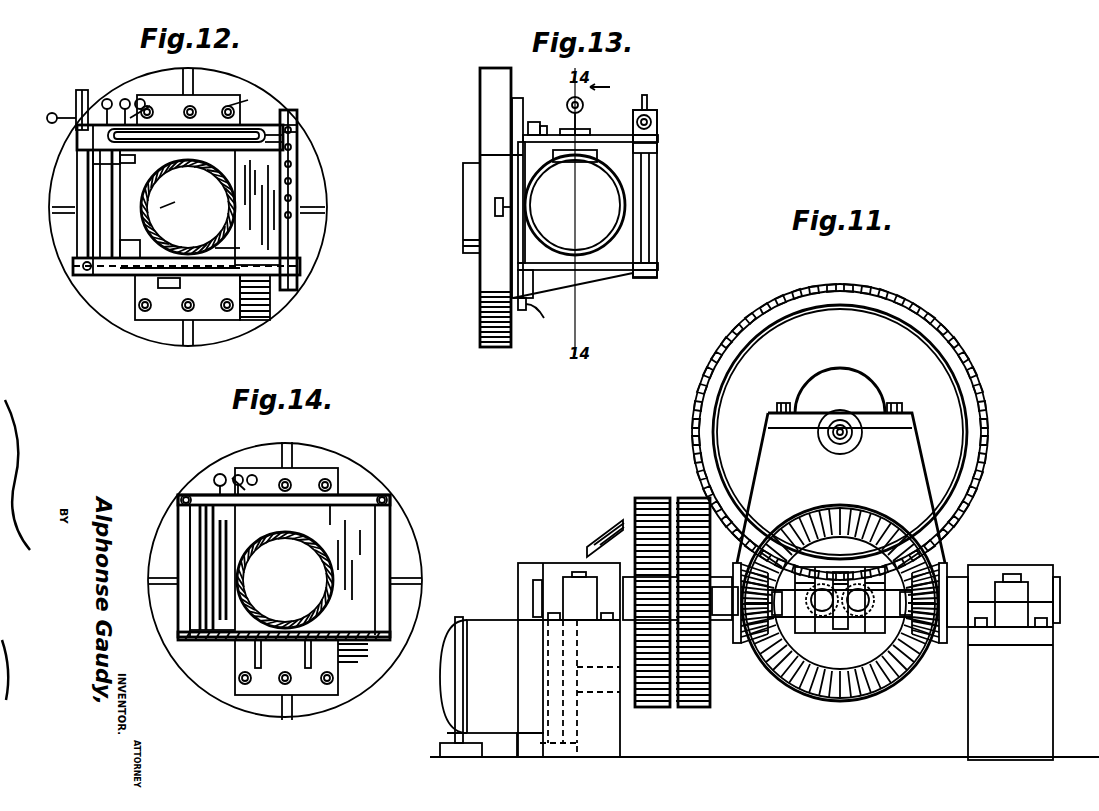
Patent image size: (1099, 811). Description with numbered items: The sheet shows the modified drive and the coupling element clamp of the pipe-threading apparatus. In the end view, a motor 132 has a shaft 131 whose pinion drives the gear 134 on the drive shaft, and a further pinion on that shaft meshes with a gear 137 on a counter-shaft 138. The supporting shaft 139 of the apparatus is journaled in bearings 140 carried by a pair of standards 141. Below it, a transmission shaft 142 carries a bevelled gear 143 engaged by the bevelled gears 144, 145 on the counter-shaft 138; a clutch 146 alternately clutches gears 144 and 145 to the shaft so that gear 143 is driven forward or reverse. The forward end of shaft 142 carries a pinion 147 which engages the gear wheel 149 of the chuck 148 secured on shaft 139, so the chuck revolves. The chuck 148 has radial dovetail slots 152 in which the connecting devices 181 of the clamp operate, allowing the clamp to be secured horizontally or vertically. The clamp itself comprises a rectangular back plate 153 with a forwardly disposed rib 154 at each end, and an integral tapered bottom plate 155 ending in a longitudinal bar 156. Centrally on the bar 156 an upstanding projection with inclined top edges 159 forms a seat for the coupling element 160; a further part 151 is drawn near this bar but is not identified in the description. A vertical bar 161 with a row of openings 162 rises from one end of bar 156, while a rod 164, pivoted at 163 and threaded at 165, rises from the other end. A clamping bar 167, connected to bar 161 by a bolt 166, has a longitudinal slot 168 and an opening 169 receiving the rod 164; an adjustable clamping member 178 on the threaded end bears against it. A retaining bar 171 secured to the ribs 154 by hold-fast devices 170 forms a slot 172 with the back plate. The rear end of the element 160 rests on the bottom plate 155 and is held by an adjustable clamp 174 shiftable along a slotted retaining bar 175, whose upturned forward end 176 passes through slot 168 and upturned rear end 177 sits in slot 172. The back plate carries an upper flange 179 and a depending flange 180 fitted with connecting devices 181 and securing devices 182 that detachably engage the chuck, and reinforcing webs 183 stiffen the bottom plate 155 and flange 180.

In FIG. 11, the shaft 131 is at (622, 715).
In FIG. 11, the motor 132 is at (491, 687).
In FIG. 11, the gear 134 is at (640, 498).
In FIG. 11, the gear 137 is at (740, 701).
In FIG. 11, the counter-shaft 138 is at (680, 598).
In FIG. 11, the supporting shaft 139 is at (841, 455).
In FIG. 11, the bearings 140 is at (778, 420).
In FIG. 11, the standards 141 is at (780, 470).
In FIG. 11, the transmission shaft 142 is at (840, 590).
In FIG. 11, the bevelled gear 143 is at (880, 685).
In FIG. 11, the bevelled gear 144 is at (738, 640).
In FIG. 11, the bevelled gear 145 is at (945, 568).
In FIG. 11, the clutch 146 is at (812, 633).
In FIG. 11, the pinion 147 is at (843, 633).
In FIG. 12, the chuck 148 is at (318, 160).
In FIG. 13, the chuck 148 is at (485, 285).
In FIG. 14, the chuck 148 is at (422, 590).
In FIG. 11, the chuck 148 is at (912, 302).
In FIG. 11, the gear wheel 149 is at (778, 307).
In FIG. 12, the cross bar 151 is at (175, 270).
In FIG. 12, the dovetail slots 152 is at (215, 95).
In FIG. 13, the dovetail slots 152 is at (495, 204).
In FIG. 12, the back plate 153 is at (297, 183).
In FIG. 14, the back plate 153 is at (365, 553).
In FIG. 12, the rib 154 is at (93, 236).
In FIG. 13, the rib 154 is at (480, 155).
In FIG. 14, the rib 154 is at (180, 525).
In FIG. 12, the bottom plate 155 is at (258, 268).
In FIG. 13, the bottom plate 155 is at (625, 272).
In FIG. 14, the bottom plate 155 is at (360, 648).
In FIG. 12, the bar 156 is at (118, 270).
In FIG. 13, the bar 156 is at (658, 278).
In FIG. 12, the inclined top edge 159 is at (233, 238).
In FIG. 12, the coupling element 160 is at (150, 228).
In FIG. 13, the coupling element 160 is at (612, 185).
In FIG. 14, the coupling element 160 is at (243, 574).
In FIG. 12, the vertically disposed bar 161 is at (300, 252).
In FIG. 13, the vertically disposed bar 161 is at (657, 126).
In FIG. 12, the openings 162 is at (298, 145).
In FIG. 12, the pivot 163 is at (95, 272).
In FIG. 13, the pivot 163 is at (660, 270).
In FIG. 12, the rod 164 is at (85, 172).
In FIG. 13, the rod 164 is at (645, 199).
In FIG. 12, the threaded end 165 is at (79, 107).
In FIG. 13, the threaded end 165 is at (648, 100).
In FIG. 12, the bolt 166 is at (300, 128).
In FIG. 12, the clamping bar 167 is at (273, 132).
In FIG. 12, the slot 168 is at (235, 135).
In FIG. 12, the opening 169 is at (77, 135).
In FIG. 13, the opening 169 is at (657, 139).
In FIG. 13, the hold-fast devices 170 is at (555, 126).
In FIG. 14, the hold-fast devices 170 is at (186, 496).
In FIG. 12, the retaining bar 171 is at (290, 128).
In FIG. 14, the retaining bar 171 is at (355, 495).
In FIG. 13, the slot 172 is at (544, 120).
In FIG. 12, the adjustable clamp 174 is at (114, 164).
In FIG. 13, the adjustable clamp 174 is at (565, 163).
In FIG. 12, the slotted retaining bar 175 is at (170, 209).
In FIG. 13, the slotted retaining bar 175 is at (615, 128).
In FIG. 14, the slotted retaining bar 175 is at (178, 502).
In FIG. 12, the upturned forward end 176 is at (140, 112).
In FIG. 13, the upturned rear end 177 is at (567, 105).
In FIG. 12, the adjustable clamping member 178 is at (56, 114).
In FIG. 13, the adjustable clamping member 178 is at (657, 118).
In FIG. 12, the flange 179 is at (168, 95).
In FIG. 13, the flange 179 is at (518, 100).
In FIG. 14, the flange 179 is at (310, 470).
In FIG. 12, the depending flange 180 is at (190, 318).
In FIG. 13, the depending flange 180 is at (521, 317).
In FIG. 14, the depending flange 180 is at (272, 690).
In FIG. 12, the connecting devices 181 is at (194, 110).
In FIG. 14, the connecting devices 181 is at (315, 731).
In FIG. 12, the securing devices 182 is at (158, 89).
In FIG. 13, the securing devices 182 is at (544, 327).
In FIG. 14, the securing devices 182 is at (240, 685).
In FIG. 12, the reinforcing webs 183 is at (214, 297).
In FIG. 13, the reinforcing webs 183 is at (548, 282).
In FIG. 14, the reinforcing webs 183 is at (255, 655).